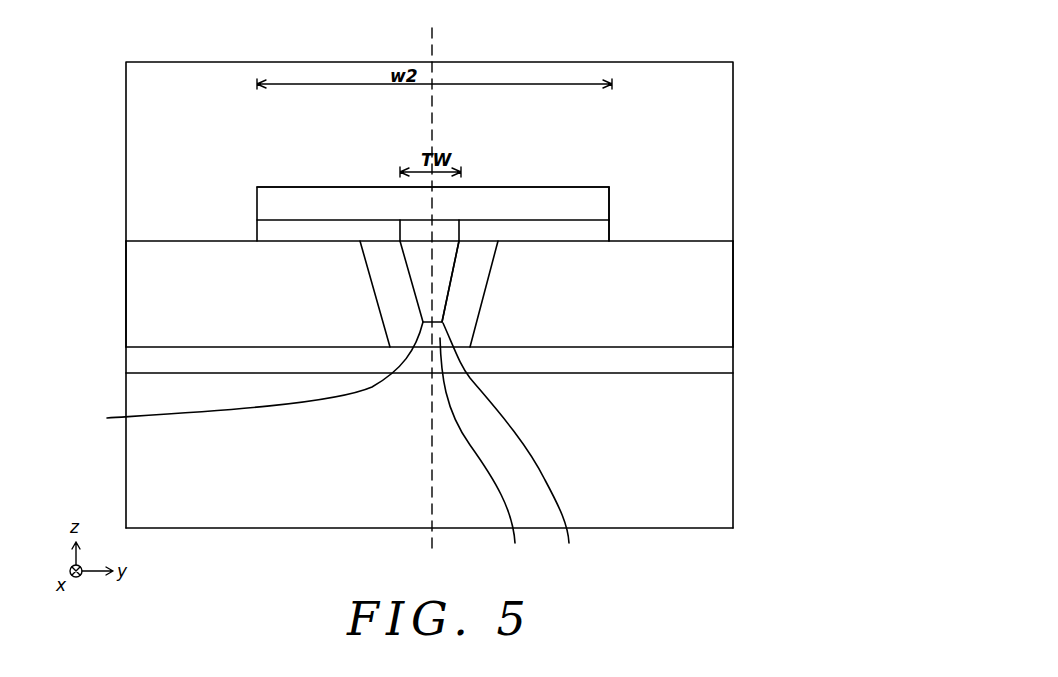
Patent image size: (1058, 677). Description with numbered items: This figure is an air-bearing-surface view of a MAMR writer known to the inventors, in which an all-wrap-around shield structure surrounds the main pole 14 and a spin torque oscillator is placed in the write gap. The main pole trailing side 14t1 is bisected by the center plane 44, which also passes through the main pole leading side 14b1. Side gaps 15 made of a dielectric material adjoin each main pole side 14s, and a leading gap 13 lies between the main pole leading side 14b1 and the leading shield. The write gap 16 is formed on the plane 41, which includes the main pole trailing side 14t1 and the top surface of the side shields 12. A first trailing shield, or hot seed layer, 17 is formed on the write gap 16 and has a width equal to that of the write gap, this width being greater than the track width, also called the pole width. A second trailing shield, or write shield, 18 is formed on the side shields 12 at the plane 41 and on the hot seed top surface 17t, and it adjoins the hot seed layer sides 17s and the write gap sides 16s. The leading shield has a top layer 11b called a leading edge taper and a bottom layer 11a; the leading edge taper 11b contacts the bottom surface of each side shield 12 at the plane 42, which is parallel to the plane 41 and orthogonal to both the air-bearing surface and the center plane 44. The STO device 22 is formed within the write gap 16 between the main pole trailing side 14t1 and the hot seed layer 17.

The bottom layer of leading shield 11a is at (786, 355).
The leading edge taper 11b is at (720, 366).
The side shields 12 is at (138, 325).
The leading gap 13 is at (484, 455).
The main pole 14 is at (513, 447).
The main pole trailing side 14t1 is at (422, 242).
The main pole leading side 14b1 is at (240, 375).
The main pole side 14s is at (450, 294).
The side gaps 15 is at (392, 277).
The write gap 16 is at (275, 232).
The write gap sides 16s is at (609, 233).
The first trailing shield (hot seed layer) 17 is at (275, 203).
The hot seed layer sides 17s is at (609, 208).
The hot seed top surface 17t is at (543, 187).
The second trailing shield (write shield) 18 is at (722, 163).
The STO device 22 is at (448, 230).
The plane 41- 41 is at (126, 242).
The plane 42- 42 is at (126, 347).
The center plane 44- 44 is at (432, 291).